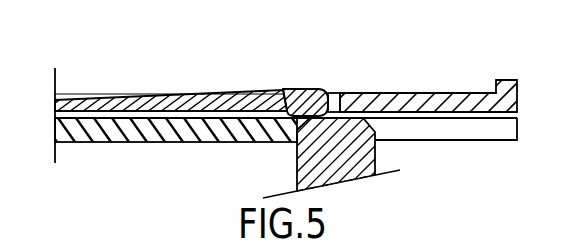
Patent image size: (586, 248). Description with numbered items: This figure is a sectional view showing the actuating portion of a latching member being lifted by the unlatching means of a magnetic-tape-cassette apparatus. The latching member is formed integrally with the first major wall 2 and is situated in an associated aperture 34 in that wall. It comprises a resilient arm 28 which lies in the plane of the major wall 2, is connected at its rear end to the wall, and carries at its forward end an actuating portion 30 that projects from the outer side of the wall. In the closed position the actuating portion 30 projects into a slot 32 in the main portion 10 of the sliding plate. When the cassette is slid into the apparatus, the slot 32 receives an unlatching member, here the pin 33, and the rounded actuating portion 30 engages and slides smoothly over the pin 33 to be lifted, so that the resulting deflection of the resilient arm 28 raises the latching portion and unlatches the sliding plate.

The first major wall 2 is at (415, 104).
The main portion of the sliding plate 10 is at (127, 128).
The resilient arm 28 is at (137, 110).
The actuating portion 30 is at (313, 98).
The slot 32 is at (455, 129).
The pin 33 is at (306, 161).
The aperture 34 is at (335, 100).